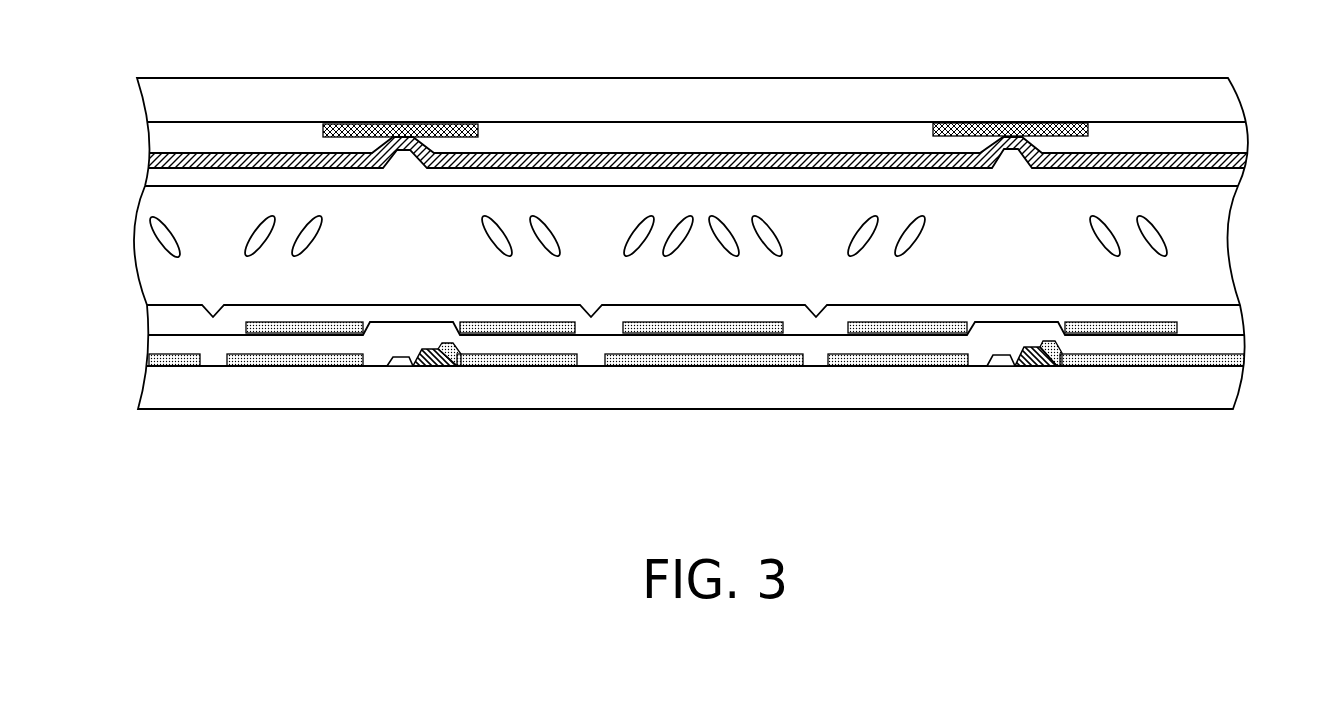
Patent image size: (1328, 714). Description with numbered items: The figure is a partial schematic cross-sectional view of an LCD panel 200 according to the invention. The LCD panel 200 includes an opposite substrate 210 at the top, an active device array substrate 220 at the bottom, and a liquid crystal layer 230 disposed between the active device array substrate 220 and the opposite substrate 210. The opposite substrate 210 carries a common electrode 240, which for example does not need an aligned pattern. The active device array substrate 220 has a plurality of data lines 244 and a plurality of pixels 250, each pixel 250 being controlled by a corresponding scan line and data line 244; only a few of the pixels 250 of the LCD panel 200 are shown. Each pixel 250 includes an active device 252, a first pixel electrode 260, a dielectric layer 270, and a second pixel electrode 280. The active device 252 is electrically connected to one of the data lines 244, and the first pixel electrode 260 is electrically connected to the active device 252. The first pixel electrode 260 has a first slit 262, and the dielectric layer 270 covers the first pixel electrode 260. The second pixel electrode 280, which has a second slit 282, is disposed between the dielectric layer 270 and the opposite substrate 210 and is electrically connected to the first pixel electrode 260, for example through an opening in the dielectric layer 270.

The LCD panel 200 is at (1294, 508).
The opposite substrate 210 is at (107, 80).
The active device array substrate 220 is at (107, 310).
The liquid crystal layer 230 is at (107, 188).
The common electrode 240 is at (838, 153).
The data lines 244 is at (400, 365).
The pixels 250 is at (975, 420).
The active device 252 is at (434, 366).
The first pixel electrode 260 is at (1240, 355).
The first slit 262 is at (818, 370).
The dielectric layer 270 is at (1236, 342).
The second pixel electrode 280 is at (1180, 329).
The second slit 282 is at (795, 340).